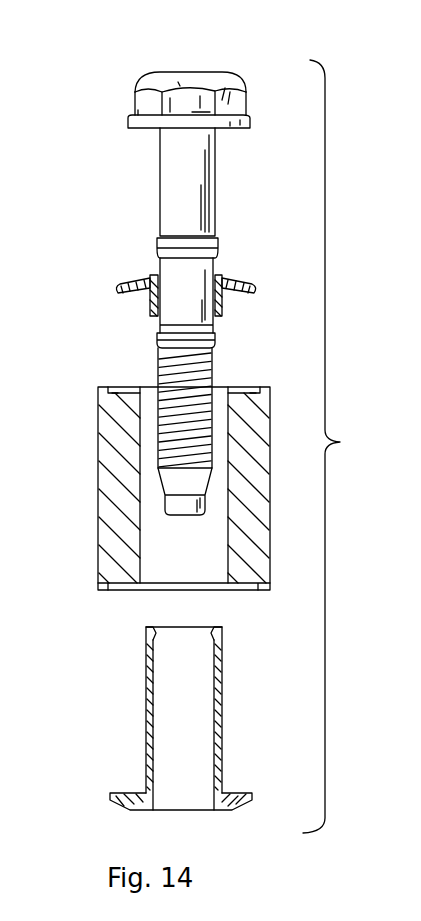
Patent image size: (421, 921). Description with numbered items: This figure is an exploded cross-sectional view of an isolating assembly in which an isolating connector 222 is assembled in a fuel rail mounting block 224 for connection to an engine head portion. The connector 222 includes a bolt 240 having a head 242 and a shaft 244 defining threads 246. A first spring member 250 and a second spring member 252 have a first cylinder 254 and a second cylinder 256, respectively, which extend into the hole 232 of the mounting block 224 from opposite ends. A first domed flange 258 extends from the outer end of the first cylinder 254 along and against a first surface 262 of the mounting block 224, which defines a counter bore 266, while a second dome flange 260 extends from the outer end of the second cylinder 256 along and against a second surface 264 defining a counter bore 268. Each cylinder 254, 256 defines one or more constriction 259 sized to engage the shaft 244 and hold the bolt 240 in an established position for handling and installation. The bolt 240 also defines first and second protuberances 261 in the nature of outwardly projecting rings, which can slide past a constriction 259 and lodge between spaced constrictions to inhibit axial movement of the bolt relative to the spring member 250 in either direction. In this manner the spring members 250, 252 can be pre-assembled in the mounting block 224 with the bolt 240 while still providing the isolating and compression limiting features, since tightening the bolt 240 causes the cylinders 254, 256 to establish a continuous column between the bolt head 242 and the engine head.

The isolating connector 222 is at (107, 107).
The bolt 240 is at (190, 62).
The head 242 is at (228, 73).
The shaft 244 is at (208, 162).
The protuberance 261 is at (157, 245).
The thread 246 is at (212, 369).
The first spring member 250 is at (238, 261).
The first cylinder 254 is at (222, 300).
The first domed flange 258 is at (247, 277).
The constriction 259 is at (150, 300).
The fuel rail mounting block 224 is at (105, 485).
The hole 232 is at (224, 565).
The first surface 262 is at (105, 388).
The counter bore 266 is at (125, 388).
The second surface 264 is at (100, 589).
The counter bore 268 is at (243, 584).
The second spring member 252 is at (118, 748).
The second cylinder 256 is at (218, 710).
The second dome flange 260 is at (243, 795).